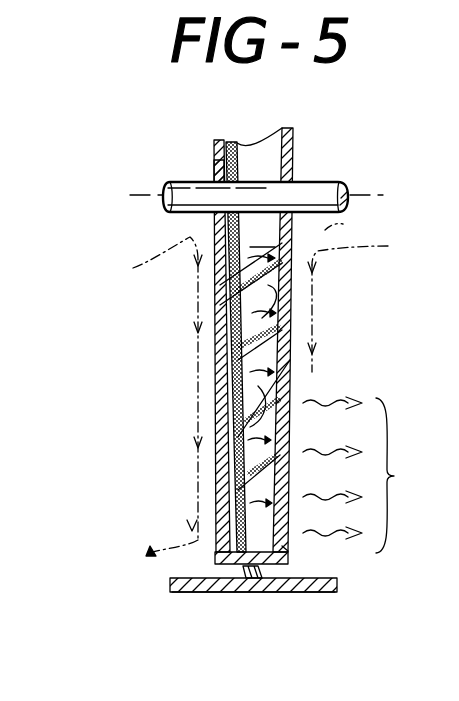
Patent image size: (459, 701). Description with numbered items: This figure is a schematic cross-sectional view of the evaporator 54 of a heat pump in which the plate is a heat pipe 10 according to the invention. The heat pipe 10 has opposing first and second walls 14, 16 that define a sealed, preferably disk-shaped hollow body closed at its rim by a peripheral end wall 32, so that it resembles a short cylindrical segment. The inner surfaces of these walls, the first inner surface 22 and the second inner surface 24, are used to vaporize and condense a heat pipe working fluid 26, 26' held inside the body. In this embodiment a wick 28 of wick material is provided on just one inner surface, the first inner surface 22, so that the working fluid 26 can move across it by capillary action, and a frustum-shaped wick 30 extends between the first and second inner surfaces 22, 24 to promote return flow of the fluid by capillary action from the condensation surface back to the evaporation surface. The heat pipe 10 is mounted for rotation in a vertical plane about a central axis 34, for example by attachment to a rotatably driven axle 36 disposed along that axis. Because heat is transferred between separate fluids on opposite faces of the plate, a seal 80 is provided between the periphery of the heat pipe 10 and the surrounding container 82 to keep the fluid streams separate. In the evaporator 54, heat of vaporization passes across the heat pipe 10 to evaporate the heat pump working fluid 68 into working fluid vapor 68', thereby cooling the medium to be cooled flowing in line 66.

The heat pipe 10 is at (120, 323).
The first wall 14 is at (216, 514).
The second wall 16 is at (290, 543).
The first inner surface 22 is at (242, 353).
The second inner surface 24 is at (288, 297).
The heat pipe working fluid 26 is at (214, 398).
The lower flap opening 26' is at (256, 427).
The wick 28 is at (222, 320).
The frustum-shaped wick 30 is at (228, 280).
The peripheral end wall 32 is at (277, 580).
The central axis 34 is at (356, 190).
The rotatably driven axle 36 is at (214, 182).
The evaporator 54 is at (294, 552).
The line 66 is at (147, 396).
The heat pump working fluid 68 is at (368, 298).
The working fluid vapor 68' is at (372, 475).
The seal 80 is at (257, 568).
The container 82 is at (188, 585).